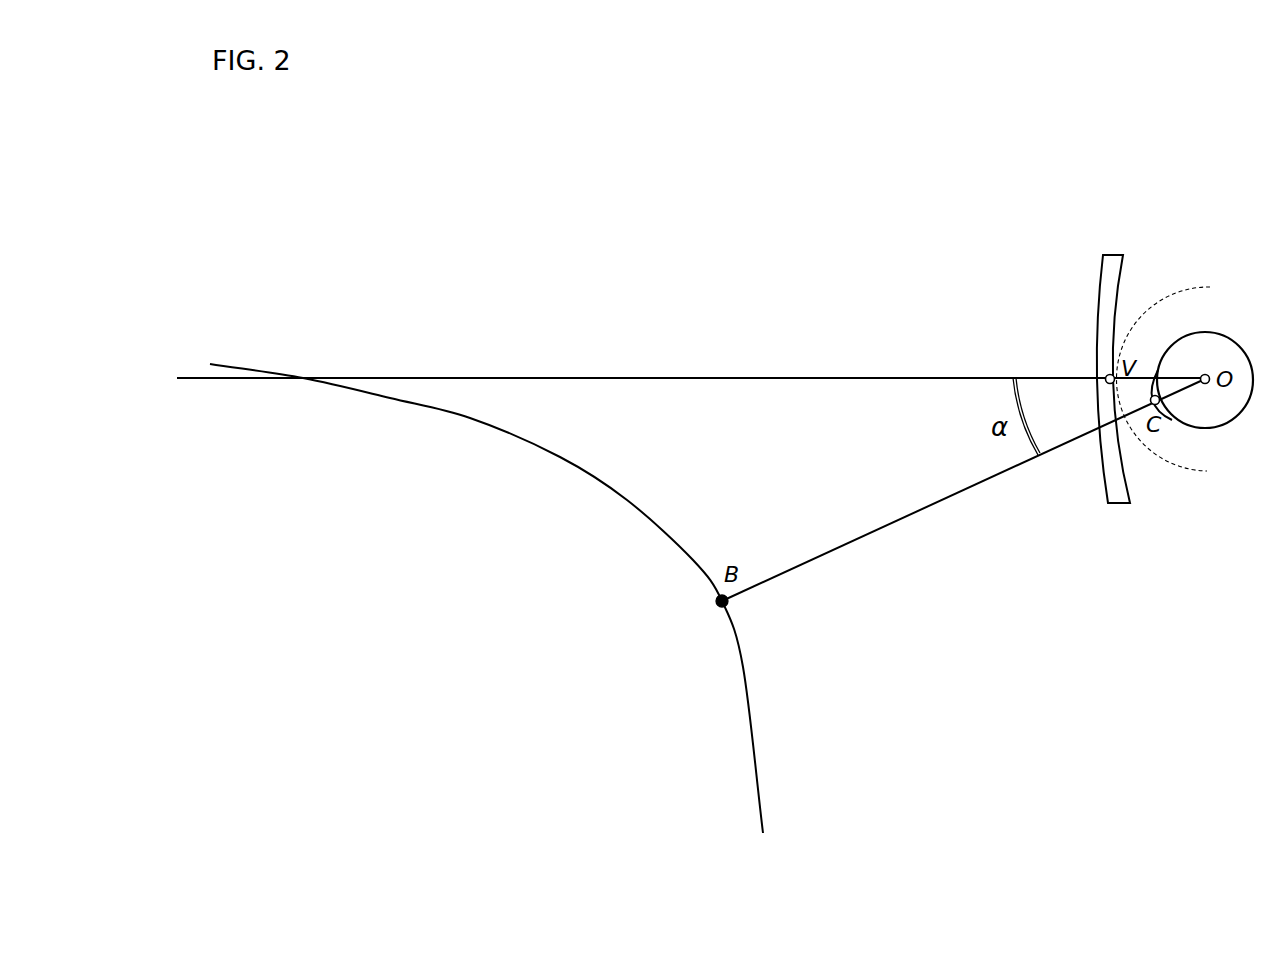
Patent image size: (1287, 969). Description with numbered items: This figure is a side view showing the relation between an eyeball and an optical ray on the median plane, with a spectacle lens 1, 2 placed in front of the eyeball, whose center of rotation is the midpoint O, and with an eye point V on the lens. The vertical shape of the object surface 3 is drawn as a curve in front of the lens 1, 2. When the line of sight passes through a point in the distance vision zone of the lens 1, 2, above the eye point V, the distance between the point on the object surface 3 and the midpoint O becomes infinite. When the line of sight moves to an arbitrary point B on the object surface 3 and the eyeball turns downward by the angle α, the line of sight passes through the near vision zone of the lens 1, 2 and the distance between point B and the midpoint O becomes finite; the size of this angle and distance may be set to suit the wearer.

The spectacle lens 1 is at (1102, 343).
The spectacle lens 2 is at (1110, 255).
The object surface 3 is at (743, 665).